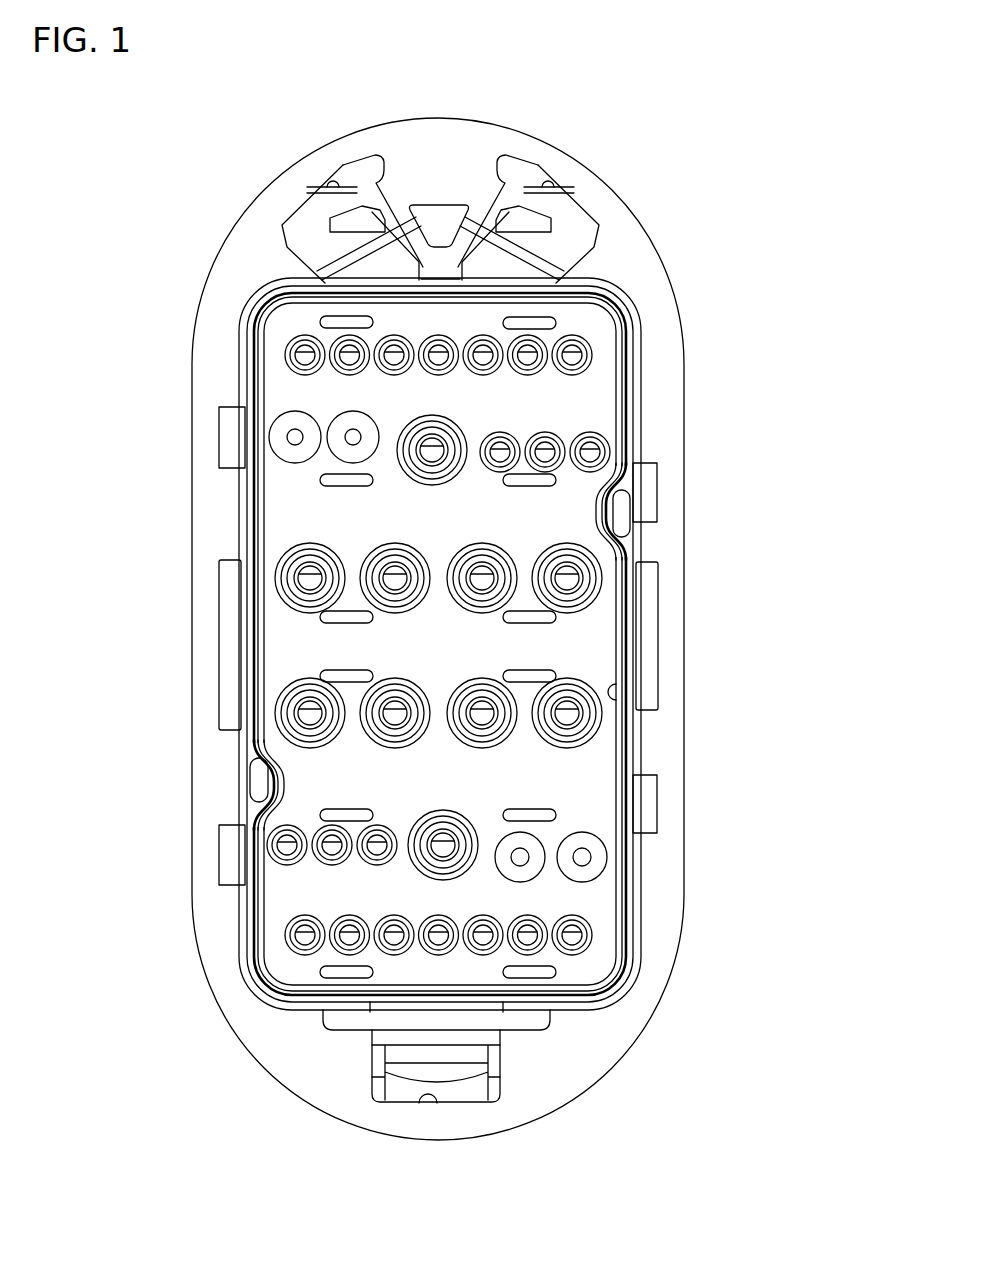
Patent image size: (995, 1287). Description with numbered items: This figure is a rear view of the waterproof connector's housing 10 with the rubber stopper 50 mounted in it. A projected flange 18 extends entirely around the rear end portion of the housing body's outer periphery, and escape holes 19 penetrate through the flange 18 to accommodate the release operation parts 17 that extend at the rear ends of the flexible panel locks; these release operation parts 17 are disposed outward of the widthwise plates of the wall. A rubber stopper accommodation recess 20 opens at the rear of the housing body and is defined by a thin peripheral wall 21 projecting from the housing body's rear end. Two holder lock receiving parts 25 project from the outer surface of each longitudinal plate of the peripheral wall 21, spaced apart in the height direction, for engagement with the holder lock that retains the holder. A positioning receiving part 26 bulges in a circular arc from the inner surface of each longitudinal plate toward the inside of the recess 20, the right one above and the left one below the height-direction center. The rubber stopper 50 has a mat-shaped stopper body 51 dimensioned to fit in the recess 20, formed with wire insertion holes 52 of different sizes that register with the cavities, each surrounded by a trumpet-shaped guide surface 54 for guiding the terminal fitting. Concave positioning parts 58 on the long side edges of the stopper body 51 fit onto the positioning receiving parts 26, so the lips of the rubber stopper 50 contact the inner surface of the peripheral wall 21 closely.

The housing 10 is at (430, 116).
The release operation part 17 is at (350, 222).
The flange 18 is at (643, 262).
The escape hole 19 is at (328, 184).
The rubber stopper accommodation recess 20 is at (610, 700).
The peripheral wall 21 is at (633, 388).
The holder lock receiving part 25 is at (225, 441).
The positioning receiving part 26 is at (620, 455).
The rubber stopper 50 is at (612, 330).
The stopper body 51 is at (592, 650).
The wire insertion hole 52 is at (290, 438).
The guide surface 54 is at (287, 455).
The positioning part 58 is at (603, 507).